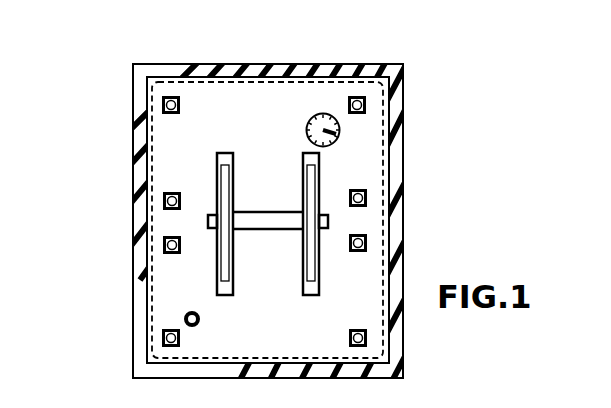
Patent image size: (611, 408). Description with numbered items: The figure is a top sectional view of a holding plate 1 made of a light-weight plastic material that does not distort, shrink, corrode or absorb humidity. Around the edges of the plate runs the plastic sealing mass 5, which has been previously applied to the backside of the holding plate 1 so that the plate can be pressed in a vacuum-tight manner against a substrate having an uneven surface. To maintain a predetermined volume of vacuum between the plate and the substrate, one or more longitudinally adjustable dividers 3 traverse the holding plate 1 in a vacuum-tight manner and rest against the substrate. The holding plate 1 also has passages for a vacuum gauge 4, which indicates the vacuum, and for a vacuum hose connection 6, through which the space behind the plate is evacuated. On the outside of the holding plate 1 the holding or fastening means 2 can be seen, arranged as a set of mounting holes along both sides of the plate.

The holding plate 1 is at (170, 160).
The holding or fastening means 2 is at (258, 226).
The longitudinally adjustable divider 3 is at (360, 98).
The vacuum gauge 4 is at (322, 113).
The plastic sealing mass 5 is at (157, 70).
The vacuum hose connection 6 is at (183, 317).